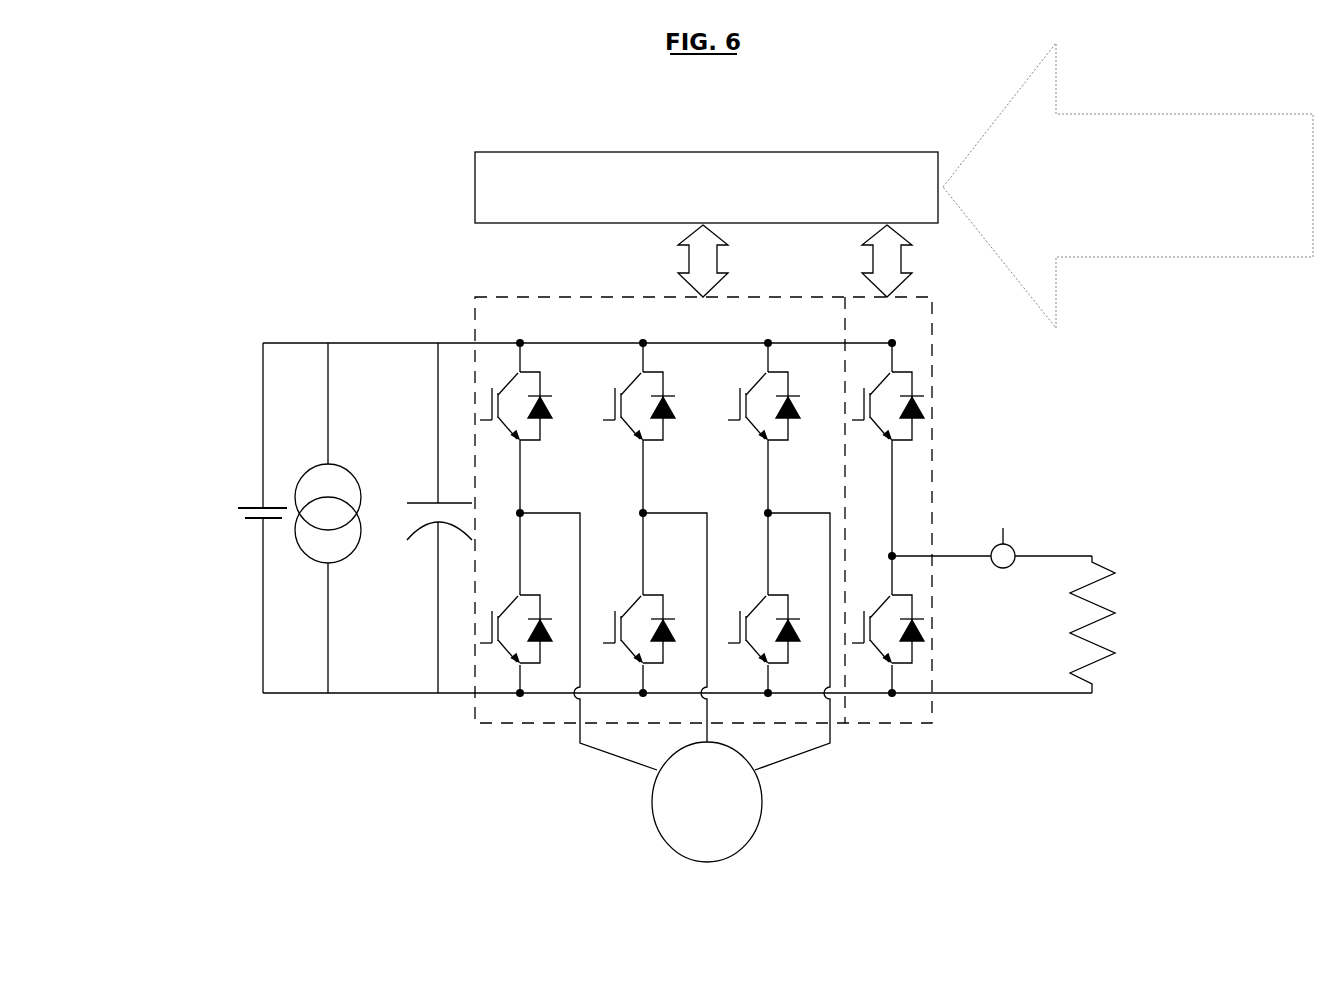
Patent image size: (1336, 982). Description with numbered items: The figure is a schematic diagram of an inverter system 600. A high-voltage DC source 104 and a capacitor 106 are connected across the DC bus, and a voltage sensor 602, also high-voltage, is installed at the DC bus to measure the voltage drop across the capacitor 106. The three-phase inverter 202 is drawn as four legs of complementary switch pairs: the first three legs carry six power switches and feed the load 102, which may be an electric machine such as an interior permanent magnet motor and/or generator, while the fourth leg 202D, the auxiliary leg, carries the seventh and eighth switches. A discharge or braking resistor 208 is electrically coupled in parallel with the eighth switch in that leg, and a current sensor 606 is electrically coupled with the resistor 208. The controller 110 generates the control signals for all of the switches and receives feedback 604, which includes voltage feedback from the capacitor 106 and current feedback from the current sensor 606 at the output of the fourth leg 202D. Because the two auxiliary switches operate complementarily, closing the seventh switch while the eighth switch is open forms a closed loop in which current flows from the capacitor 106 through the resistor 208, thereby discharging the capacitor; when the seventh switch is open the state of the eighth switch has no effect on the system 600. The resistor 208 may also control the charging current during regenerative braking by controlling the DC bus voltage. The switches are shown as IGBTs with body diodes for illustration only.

The inverter system 600 is at (687, 96).
The controller 110 is at (706, 224).
The inverter 202 is at (512, 297).
The fourth leg 202D is at (932, 364).
The high-voltage DC source 104 is at (220, 528).
The voltage sensor 602 is at (359, 444).
The capacitor 106 is at (424, 565).
The current sensor 606 is at (1018, 528).
The resistor 208 is at (1126, 624).
The feedback 604 is at (1160, 255).
The load 102 is at (707, 818).